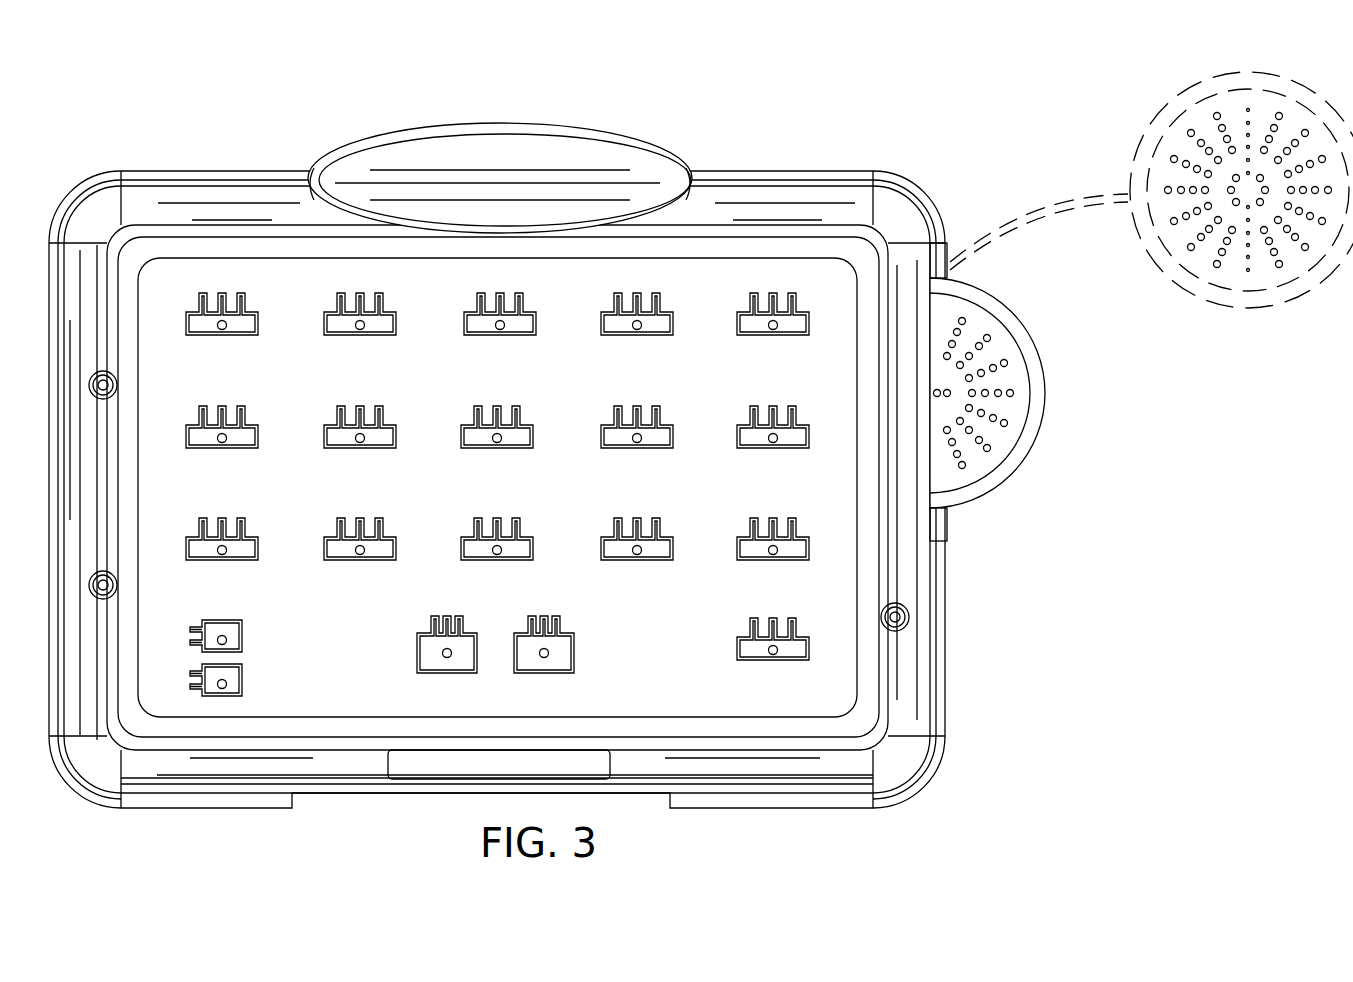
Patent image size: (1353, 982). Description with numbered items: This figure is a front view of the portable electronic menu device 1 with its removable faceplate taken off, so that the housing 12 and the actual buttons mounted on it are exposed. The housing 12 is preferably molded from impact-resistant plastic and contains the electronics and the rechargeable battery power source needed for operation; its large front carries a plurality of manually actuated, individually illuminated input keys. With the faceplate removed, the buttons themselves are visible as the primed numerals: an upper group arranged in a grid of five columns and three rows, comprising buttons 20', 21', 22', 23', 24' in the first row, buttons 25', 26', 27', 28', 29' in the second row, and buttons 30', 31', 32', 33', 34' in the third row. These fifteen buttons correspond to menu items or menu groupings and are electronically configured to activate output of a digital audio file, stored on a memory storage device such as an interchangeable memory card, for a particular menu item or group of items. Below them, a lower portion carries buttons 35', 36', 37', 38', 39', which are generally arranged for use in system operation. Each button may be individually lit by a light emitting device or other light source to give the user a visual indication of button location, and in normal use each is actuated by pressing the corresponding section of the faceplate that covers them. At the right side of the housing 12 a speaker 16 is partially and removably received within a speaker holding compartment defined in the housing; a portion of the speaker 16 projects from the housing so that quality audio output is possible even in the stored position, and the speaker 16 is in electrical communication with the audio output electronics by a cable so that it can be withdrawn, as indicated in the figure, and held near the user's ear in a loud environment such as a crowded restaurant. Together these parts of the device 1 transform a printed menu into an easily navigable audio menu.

The talking menu device 1 is at (701, 438).
The housing 12 is at (145, 197).
The speaker 16 is at (1185, 282).
The button 20' is at (251, 307).
The button 21' is at (390, 306).
The button 22' is at (531, 306).
The button 23' is at (672, 308).
The button 24' is at (794, 339).
The button 25' is at (204, 399).
The button 26' is at (338, 404).
The button 27' is at (469, 405).
The button 28' is at (610, 404).
The button 29' is at (751, 407).
The button 30' is at (206, 520).
The button 31' is at (341, 521).
The button 32' is at (476, 527).
The button 33' is at (610, 522).
The button 34' is at (791, 513).
The button 35' is at (252, 614).
The button 36' is at (262, 683).
The button 37' is at (421, 628).
The button 38' is at (580, 656).
The button 39' is at (744, 628).